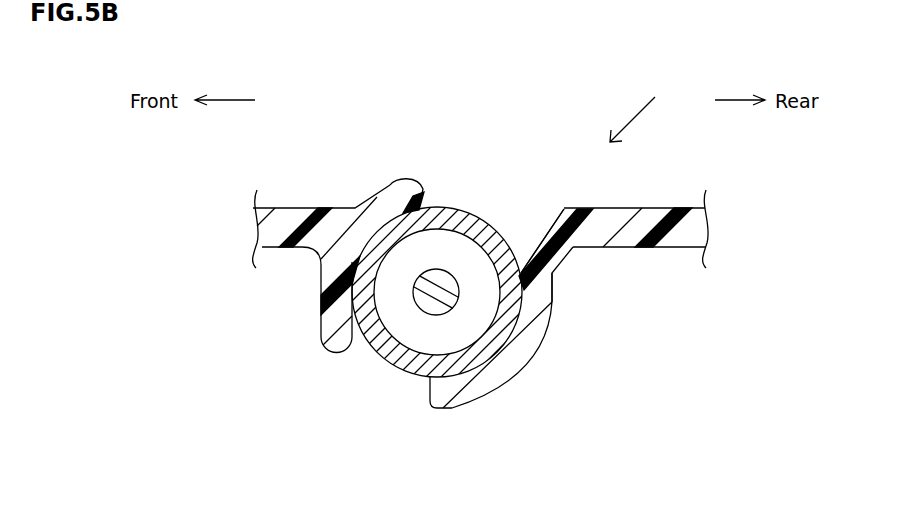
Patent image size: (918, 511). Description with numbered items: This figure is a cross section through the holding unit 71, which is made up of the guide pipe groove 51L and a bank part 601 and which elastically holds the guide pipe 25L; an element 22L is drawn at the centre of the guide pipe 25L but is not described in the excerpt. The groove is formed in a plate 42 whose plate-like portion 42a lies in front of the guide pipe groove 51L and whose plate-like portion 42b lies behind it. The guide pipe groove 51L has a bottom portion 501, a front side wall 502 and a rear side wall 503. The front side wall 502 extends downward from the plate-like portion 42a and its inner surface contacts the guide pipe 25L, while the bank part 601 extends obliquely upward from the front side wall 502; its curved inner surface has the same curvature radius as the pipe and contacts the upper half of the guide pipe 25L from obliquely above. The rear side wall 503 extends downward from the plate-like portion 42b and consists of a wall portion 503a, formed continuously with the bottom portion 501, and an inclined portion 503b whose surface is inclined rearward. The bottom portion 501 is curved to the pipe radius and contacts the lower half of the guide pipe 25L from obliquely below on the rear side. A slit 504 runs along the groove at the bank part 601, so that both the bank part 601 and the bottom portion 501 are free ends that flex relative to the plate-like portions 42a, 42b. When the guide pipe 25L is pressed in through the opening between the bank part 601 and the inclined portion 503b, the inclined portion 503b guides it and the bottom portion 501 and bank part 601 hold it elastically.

The side plate 42 is at (449, 240).
The plate-like portion 42a is at (329, 240).
The plate-like portion 42b is at (625, 208).
The left shaft 22L is at (429, 285).
The guide pipe 25L is at (487, 206).
The guide pipe groove 51L is at (512, 302).
The bottom portion 501 is at (540, 350).
The front side wall 502 is at (306, 327).
The rear side wall 503 is at (604, 233).
The wall portion 503a is at (553, 289).
The inclined portion 503b is at (545, 238).
The slit 504 is at (431, 388).
The bank part 601 is at (400, 184).
The holding unit 71 is at (641, 107).